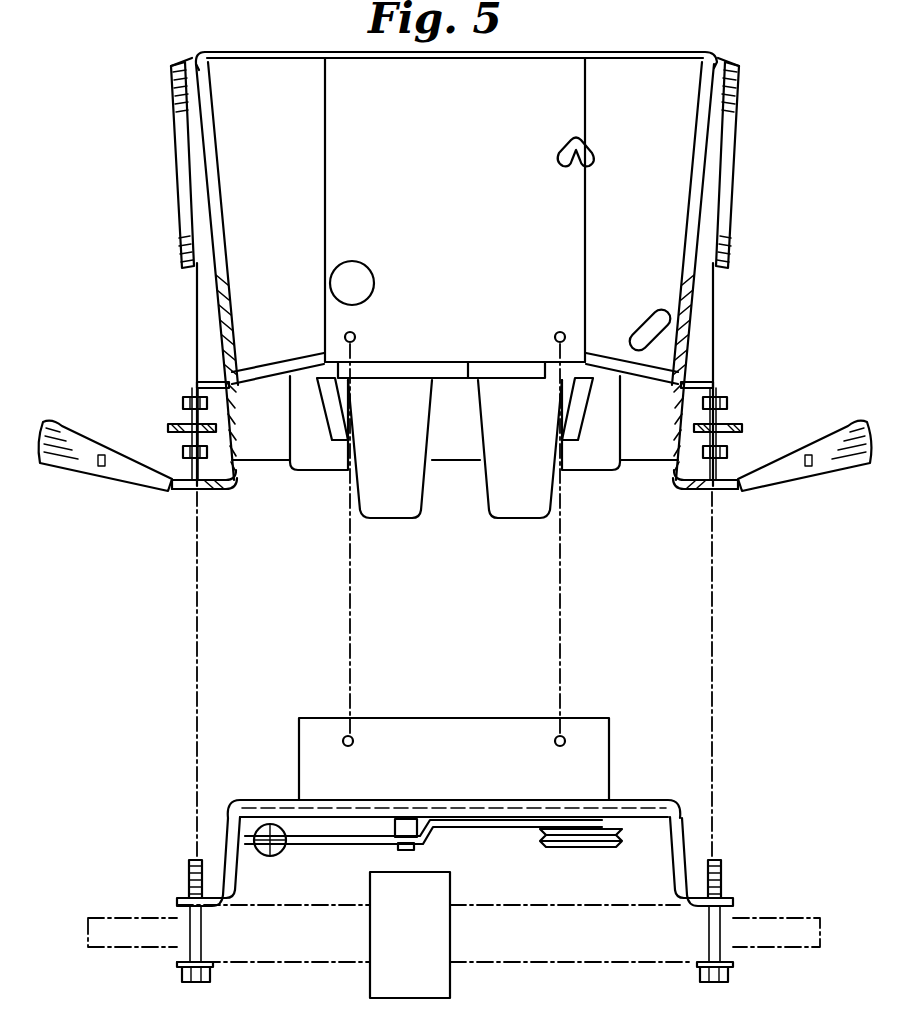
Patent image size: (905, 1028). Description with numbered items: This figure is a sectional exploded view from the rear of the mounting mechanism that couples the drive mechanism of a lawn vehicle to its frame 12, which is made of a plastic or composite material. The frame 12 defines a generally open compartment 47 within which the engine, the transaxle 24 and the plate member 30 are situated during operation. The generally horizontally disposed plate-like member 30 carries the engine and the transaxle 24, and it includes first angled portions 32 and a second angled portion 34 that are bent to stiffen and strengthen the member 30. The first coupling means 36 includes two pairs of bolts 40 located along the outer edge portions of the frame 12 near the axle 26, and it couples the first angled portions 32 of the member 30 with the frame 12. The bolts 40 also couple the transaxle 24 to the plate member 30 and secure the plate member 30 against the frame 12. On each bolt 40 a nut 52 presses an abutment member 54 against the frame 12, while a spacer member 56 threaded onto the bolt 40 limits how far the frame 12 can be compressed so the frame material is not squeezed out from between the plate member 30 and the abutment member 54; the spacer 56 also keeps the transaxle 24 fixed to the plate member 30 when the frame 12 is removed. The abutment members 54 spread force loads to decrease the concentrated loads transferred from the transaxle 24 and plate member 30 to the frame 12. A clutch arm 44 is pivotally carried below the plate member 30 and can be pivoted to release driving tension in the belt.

The frame 12 is at (697, 308).
The transaxle 24 is at (318, 963).
The axle 26 is at (757, 917).
The plate-like member 30 is at (628, 800).
The first angled portions 32 is at (225, 835).
The second angled portion 34 is at (442, 763).
The first coupling means 36 is at (175, 889).
The bolts 40 is at (180, 978).
The clutch arm 44 is at (484, 828).
The open compartment 47 is at (236, 448).
The nut 52 is at (189, 396).
The abutment member 54 is at (174, 424).
The spacer member 56 is at (185, 449).